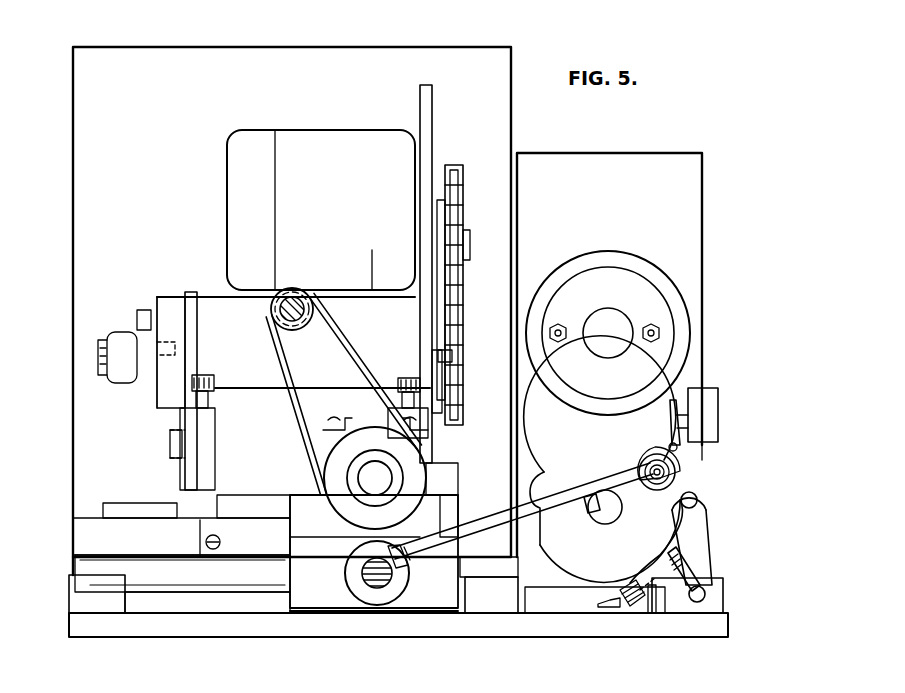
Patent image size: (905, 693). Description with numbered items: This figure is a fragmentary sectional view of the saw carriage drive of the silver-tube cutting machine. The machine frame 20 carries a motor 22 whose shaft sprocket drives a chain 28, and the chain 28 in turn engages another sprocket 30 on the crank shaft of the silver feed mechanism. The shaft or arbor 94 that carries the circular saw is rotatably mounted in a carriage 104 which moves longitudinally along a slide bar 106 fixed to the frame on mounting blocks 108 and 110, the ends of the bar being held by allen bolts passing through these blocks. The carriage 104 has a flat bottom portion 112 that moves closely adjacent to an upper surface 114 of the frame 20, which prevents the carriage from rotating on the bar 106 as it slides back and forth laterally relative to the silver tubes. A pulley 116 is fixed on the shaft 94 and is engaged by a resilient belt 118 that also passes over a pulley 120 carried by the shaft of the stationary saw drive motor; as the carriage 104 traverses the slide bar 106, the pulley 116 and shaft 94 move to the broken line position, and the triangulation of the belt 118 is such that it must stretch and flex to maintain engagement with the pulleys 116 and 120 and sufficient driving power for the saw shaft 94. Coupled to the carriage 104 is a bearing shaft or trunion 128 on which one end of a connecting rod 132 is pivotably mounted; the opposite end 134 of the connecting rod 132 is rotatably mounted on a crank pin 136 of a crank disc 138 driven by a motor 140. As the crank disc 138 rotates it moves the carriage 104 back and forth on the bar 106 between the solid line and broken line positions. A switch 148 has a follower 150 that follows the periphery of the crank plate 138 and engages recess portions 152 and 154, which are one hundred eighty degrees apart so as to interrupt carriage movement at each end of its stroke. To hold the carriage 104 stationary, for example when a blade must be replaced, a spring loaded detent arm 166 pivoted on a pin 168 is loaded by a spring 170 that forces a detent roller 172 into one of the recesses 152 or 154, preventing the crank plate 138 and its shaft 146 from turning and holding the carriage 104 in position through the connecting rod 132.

The frame 20 is at (283, 622).
The motor 22 is at (341, 194).
The chain 28 is at (456, 310).
The sprocket 30 is at (455, 365).
The shaft or arbor 94 is at (378, 480).
The carriage 104 is at (439, 500).
The slide bar 106 is at (183, 570).
The mounting block 108 is at (86, 590).
The mounting block 110 is at (494, 610).
The flat bottom portion 112 is at (414, 615).
The upper surface 114 is at (222, 603).
The pulley 116 is at (343, 515).
The resilient belt 118 is at (355, 370).
The pulley 120 is at (300, 290).
The bearing shaft or trunion 128 is at (372, 590).
The connecting rod 132 is at (573, 540).
The opposite end 134 is at (455, 548).
The crank pin 136 is at (675, 400).
The crank disc 138 is at (588, 442).
The motor 140 is at (664, 318).
The shaft 146 is at (612, 512).
The switch 148 is at (703, 410).
The follower 150 is at (678, 446).
The recess portion 152 is at (700, 492).
The recess portion 154 is at (543, 512).
The spring loaded detent arm 166 is at (712, 562).
The pin 168 is at (705, 597).
The spring 170 is at (664, 595).
The detent roller 172 is at (712, 530).